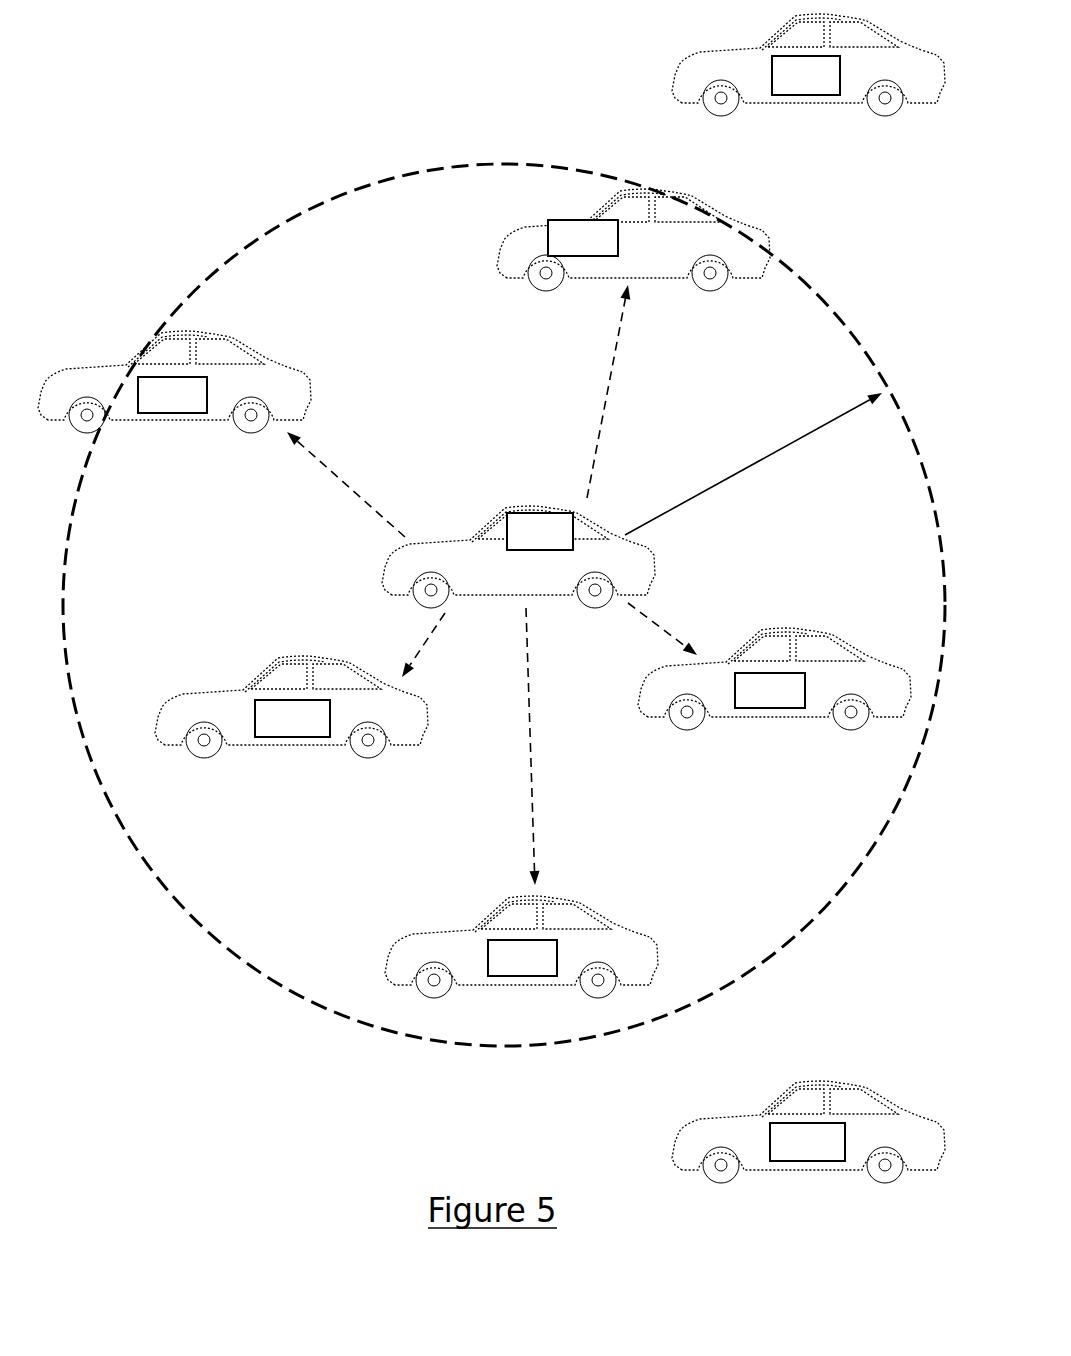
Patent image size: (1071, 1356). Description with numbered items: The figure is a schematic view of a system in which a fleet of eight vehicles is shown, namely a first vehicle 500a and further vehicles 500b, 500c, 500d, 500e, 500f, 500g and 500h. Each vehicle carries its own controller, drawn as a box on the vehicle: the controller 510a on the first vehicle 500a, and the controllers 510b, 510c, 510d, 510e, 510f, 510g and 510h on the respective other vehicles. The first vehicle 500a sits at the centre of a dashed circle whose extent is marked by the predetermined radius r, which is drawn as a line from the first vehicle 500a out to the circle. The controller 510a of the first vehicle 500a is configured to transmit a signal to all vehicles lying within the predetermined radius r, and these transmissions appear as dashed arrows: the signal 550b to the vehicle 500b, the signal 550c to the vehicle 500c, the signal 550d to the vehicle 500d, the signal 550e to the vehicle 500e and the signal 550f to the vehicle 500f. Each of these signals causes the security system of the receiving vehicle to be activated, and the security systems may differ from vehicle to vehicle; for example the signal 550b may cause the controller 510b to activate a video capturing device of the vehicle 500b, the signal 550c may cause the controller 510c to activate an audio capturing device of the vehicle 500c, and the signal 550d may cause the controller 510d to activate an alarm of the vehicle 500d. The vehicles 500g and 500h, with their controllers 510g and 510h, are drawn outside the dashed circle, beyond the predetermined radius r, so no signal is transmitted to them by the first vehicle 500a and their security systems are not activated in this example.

The first vehicle 500a is at (518, 557).
The vehicle 500b is at (633, 240).
The vehicle 500c is at (174, 382).
The vehicle 500d is at (291, 707).
The vehicle 500e is at (774, 679).
The vehicle 500f is at (521, 947).
The vehicle 500g is at (808, 65).
The vehicle 500h is at (808, 1132).
The controller 510a is at (540, 531).
The controller 510b is at (583, 238).
The controller 510c is at (172, 395).
The controller 510d is at (292, 718).
The controller 510e is at (770, 690).
The controller 510f is at (522, 958).
The controller 510g is at (806, 75).
The controller 510h is at (807, 1142).
The signal 550b is at (630, 391).
The signal 550c is at (346, 484).
The signal 550d is at (443, 645).
The signal 550e is at (670, 629).
The signal 550f is at (553, 746).
The predetermined radius r is at (753, 464).